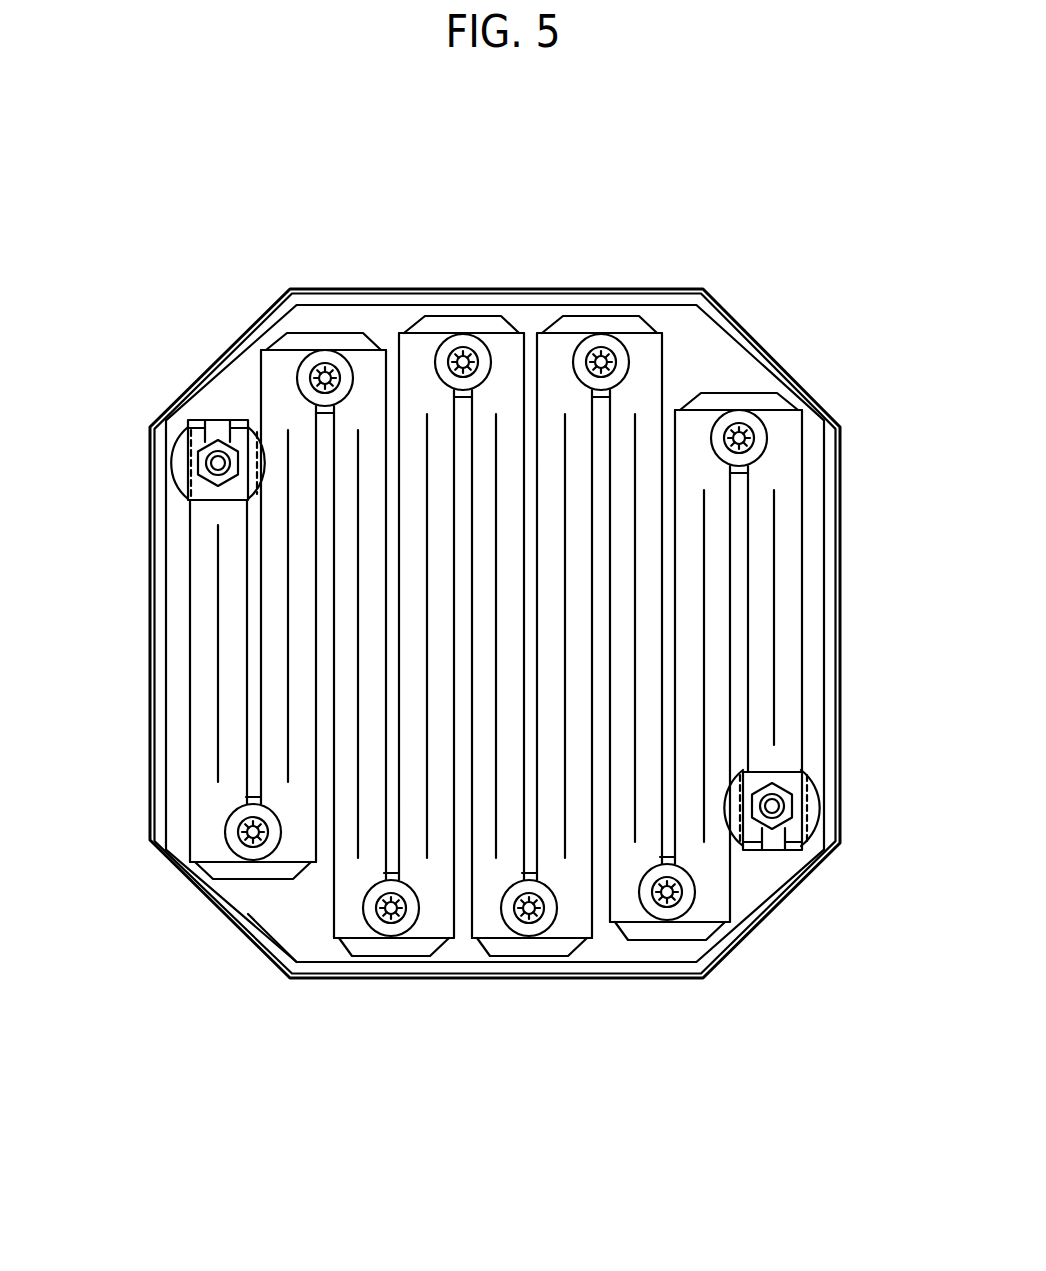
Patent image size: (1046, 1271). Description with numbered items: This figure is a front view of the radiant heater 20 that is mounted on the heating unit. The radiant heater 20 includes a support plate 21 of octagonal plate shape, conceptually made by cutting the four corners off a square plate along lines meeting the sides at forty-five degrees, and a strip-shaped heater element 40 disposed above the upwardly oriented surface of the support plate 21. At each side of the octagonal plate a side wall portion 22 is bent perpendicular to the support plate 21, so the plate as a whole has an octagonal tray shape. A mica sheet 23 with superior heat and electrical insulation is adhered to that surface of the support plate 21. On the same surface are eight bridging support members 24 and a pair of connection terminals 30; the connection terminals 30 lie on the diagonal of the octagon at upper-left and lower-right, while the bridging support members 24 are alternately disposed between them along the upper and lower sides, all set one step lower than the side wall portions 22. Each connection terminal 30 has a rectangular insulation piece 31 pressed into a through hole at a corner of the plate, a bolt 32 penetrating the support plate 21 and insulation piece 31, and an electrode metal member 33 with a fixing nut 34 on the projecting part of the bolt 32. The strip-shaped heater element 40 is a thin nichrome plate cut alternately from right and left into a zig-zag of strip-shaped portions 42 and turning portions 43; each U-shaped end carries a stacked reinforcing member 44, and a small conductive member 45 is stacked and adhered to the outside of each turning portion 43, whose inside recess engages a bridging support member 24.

The radiant heater 20 is at (869, 221).
The support plate 21 is at (695, 282).
The side wall portion 22 is at (245, 333).
The mica sheet 23 is at (290, 940).
The bridging support member 24 is at (281, 390).
The connection terminal 30 is at (508, 698).
The insulation piece 31 is at (823, 786).
The bolt 32 is at (789, 773).
The electrode metal member 33 is at (801, 862).
The fixing nut 34 is at (763, 851).
The strip-shaped heater element 40 is at (152, 581).
The strip-shaped portion 42 is at (195, 687).
The turning portion 43 is at (360, 348).
The reinforcing member 44 is at (797, 829).
The conductive member 45 is at (313, 331).